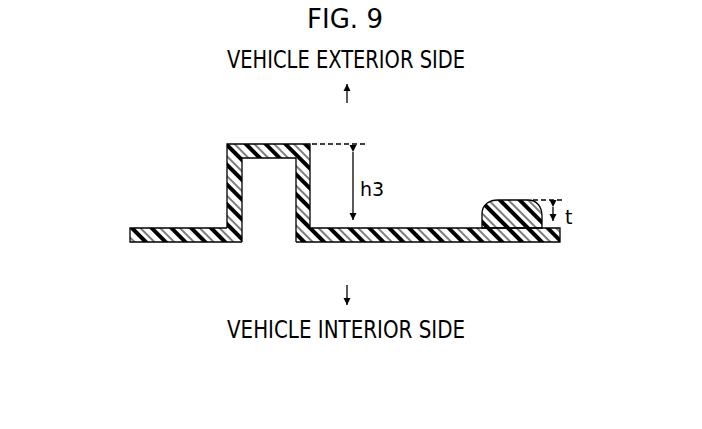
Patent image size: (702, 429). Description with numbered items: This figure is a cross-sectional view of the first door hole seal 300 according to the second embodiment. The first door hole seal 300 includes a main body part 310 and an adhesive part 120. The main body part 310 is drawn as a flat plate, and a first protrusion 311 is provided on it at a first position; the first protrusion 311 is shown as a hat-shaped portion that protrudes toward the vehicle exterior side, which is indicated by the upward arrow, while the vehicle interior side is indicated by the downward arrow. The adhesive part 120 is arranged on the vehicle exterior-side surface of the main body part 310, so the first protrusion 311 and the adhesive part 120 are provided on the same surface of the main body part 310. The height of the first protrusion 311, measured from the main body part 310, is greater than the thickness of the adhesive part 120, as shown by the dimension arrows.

The first door hole seal 300 is at (108, 162).
The main body part 310 is at (183, 227).
The first protrusion 311 is at (272, 150).
The adhesive part 120 is at (515, 199).